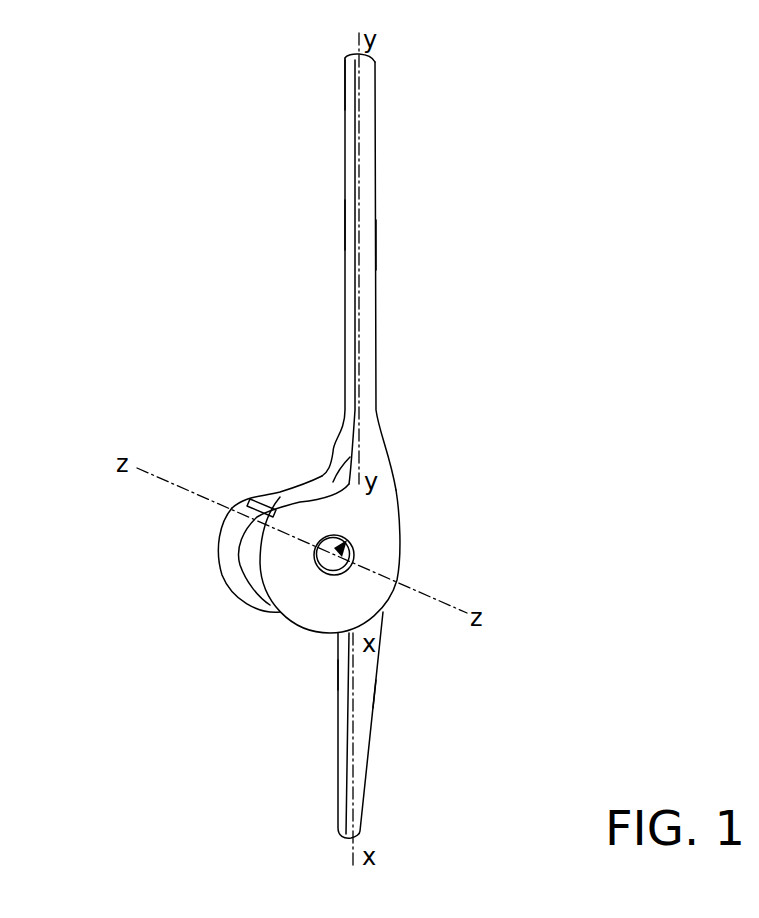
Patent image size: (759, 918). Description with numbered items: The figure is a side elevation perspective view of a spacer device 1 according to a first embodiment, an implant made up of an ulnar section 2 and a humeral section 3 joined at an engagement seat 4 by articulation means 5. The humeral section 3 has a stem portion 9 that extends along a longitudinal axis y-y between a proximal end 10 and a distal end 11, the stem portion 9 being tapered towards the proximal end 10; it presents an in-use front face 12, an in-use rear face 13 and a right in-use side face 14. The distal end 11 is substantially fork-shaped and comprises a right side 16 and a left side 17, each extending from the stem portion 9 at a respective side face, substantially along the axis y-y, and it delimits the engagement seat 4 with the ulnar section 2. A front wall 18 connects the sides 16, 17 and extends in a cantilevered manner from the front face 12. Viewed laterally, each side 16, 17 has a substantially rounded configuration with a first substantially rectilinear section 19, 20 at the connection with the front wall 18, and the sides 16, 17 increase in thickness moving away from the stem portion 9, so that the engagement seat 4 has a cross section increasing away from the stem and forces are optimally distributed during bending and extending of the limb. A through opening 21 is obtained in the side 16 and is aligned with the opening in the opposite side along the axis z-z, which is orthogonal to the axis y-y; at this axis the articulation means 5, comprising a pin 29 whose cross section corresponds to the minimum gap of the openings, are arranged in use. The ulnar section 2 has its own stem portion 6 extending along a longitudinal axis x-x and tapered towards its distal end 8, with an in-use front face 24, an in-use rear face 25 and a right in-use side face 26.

The spacer device 1 is at (655, 253).
The ulnar section 2 is at (437, 744).
The humeral section 3 is at (383, 186).
The engagement seat 4 is at (222, 512).
The articulation means 5 is at (350, 541).
The stem portion 6 is at (348, 754).
The distal end 8 is at (360, 831).
The stem portion 9 is at (345, 229).
The proximal end 10 is at (345, 100).
The distal end 11 is at (425, 560).
The front face 12 is at (354, 298).
The rear face 13 is at (377, 242).
The side face 14 is at (368, 335).
The side 16 is at (372, 596).
The side 17 is at (219, 565).
The front wall 18 is at (332, 483).
The first substantially rectilinear section 19 is at (320, 495).
The first substantially rectilinear section 20 is at (255, 498).
The through opening 21 is at (333, 575).
The front face 24 is at (338, 673).
The rear face 25 is at (373, 708).
The side face 26 is at (357, 773).
The pin 29 is at (322, 560).